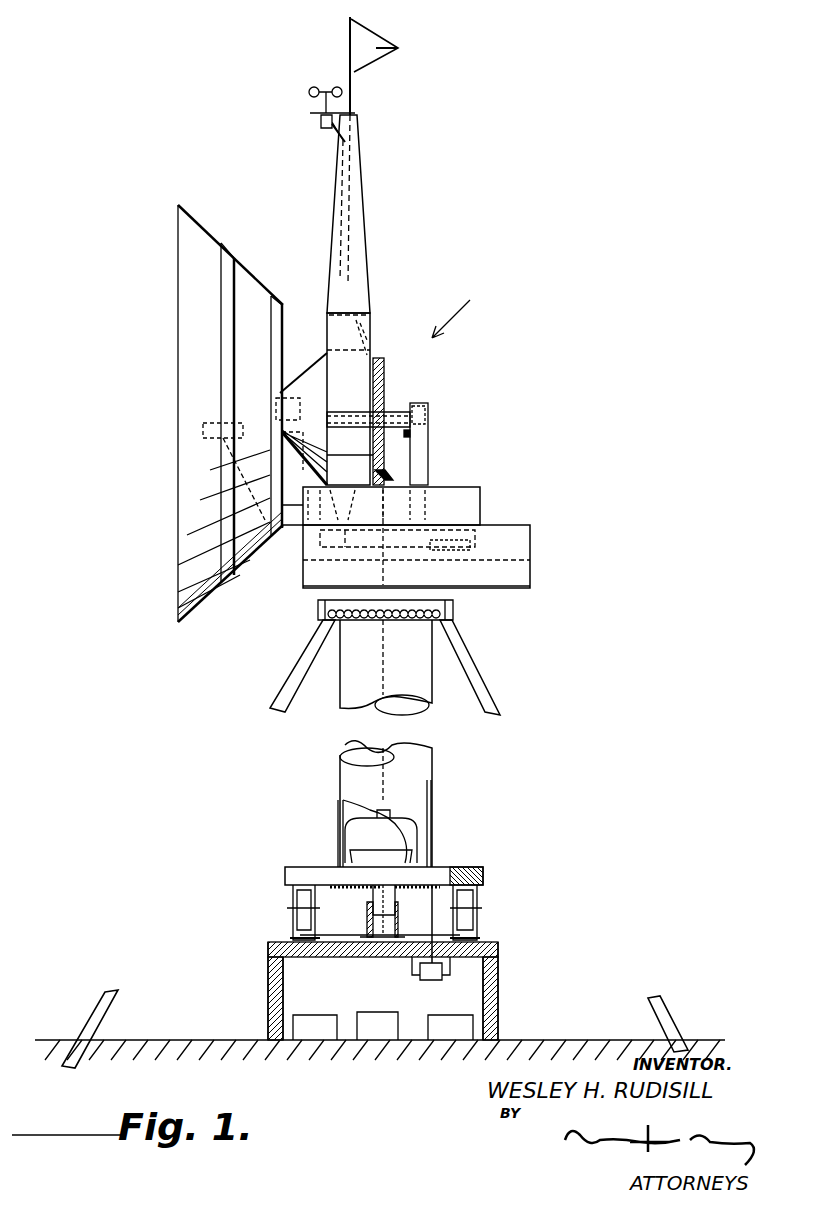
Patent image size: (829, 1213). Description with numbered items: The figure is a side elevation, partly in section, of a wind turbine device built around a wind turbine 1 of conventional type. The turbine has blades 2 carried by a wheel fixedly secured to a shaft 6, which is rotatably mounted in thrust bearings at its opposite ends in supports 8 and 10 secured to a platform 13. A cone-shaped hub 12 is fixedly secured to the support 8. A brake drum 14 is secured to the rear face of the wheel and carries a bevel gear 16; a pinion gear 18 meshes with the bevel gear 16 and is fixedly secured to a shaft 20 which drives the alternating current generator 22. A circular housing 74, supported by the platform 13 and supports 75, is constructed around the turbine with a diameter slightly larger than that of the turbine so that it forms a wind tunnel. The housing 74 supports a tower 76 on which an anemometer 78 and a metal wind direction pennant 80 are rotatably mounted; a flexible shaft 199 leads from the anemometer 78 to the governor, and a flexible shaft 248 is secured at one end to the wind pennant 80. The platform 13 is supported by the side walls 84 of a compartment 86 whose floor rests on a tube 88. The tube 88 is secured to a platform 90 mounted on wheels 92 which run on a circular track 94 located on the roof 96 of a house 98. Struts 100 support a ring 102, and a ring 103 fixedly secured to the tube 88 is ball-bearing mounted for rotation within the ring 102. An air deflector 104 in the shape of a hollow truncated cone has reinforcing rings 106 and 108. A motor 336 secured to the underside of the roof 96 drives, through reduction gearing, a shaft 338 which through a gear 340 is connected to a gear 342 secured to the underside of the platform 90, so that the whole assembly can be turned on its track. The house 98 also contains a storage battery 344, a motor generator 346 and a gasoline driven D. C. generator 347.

The wind turbine 1 is at (456, 308).
The blades 2 is at (372, 313).
The shaft 6 is at (400, 412).
The support 8 is at (303, 479).
The support 10 is at (425, 475).
The cone-shaped hub 12 is at (305, 380).
The platform 13 is at (505, 525).
The brake drum 14 is at (369, 360).
The bevel gear 16 is at (380, 362).
The pinion gear 18 is at (393, 478).
The shaft 20 is at (382, 566).
The alternating current generator 22 is at (410, 835).
The circular housing 74 is at (370, 410).
The supports 75 is at (360, 455).
The tower 76 is at (362, 265).
The anemometer 78 is at (311, 89).
The metal wind direction pennant 80 is at (382, 40).
The side walls 84 is at (530, 558).
The compartment 86 is at (512, 578).
The tube 88 is at (345, 695).
The platform 90 is at (483, 872).
The wheels 92 is at (478, 915).
The circular track 94 is at (480, 935).
The roof 96 is at (268, 942).
The house 98 is at (516, 975).
The struts 100 is at (292, 666).
The ring 102 is at (322, 610).
The ring 103 is at (333, 600).
The air deflector 104 is at (205, 237).
The reinforcing ring 106 is at (290, 535).
The reinforcing ring 108 is at (240, 580).
The flexible shaft 199 is at (340, 240).
The flexible shaft 248 is at (365, 225).
The motor 336 is at (432, 980).
The shaft 338 is at (435, 910).
The gear 340 is at (465, 882).
The gear 342 is at (415, 880).
The storage battery 344 is at (295, 1016).
The motor generator 346 is at (380, 1025).
The gasoline driven D. C. generator 347 is at (455, 1025).